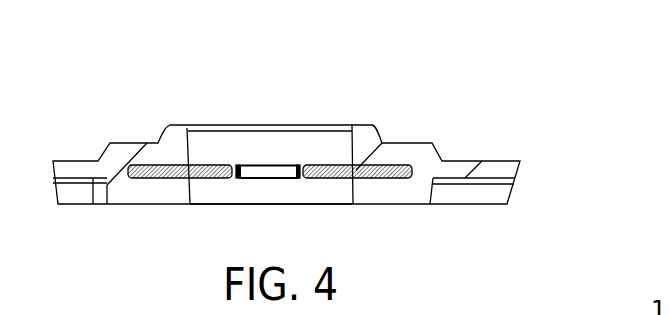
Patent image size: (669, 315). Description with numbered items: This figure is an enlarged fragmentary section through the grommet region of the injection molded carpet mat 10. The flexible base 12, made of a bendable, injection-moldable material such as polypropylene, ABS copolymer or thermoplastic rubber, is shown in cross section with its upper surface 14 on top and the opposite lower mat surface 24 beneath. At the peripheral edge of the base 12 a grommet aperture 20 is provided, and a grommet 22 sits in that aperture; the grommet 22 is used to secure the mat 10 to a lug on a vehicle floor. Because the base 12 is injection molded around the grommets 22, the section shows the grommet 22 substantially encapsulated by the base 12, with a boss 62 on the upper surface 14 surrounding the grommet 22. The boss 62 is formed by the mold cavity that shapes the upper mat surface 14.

The injection molded carpet mat 10 is at (443, 91).
The flexible base 12 is at (518, 166).
The upper surface 14 is at (470, 162).
The grommet aperture 20 is at (288, 165).
The grommet 22 is at (203, 180).
The lower mat surface 24 is at (383, 205).
The boss 62 is at (104, 143).